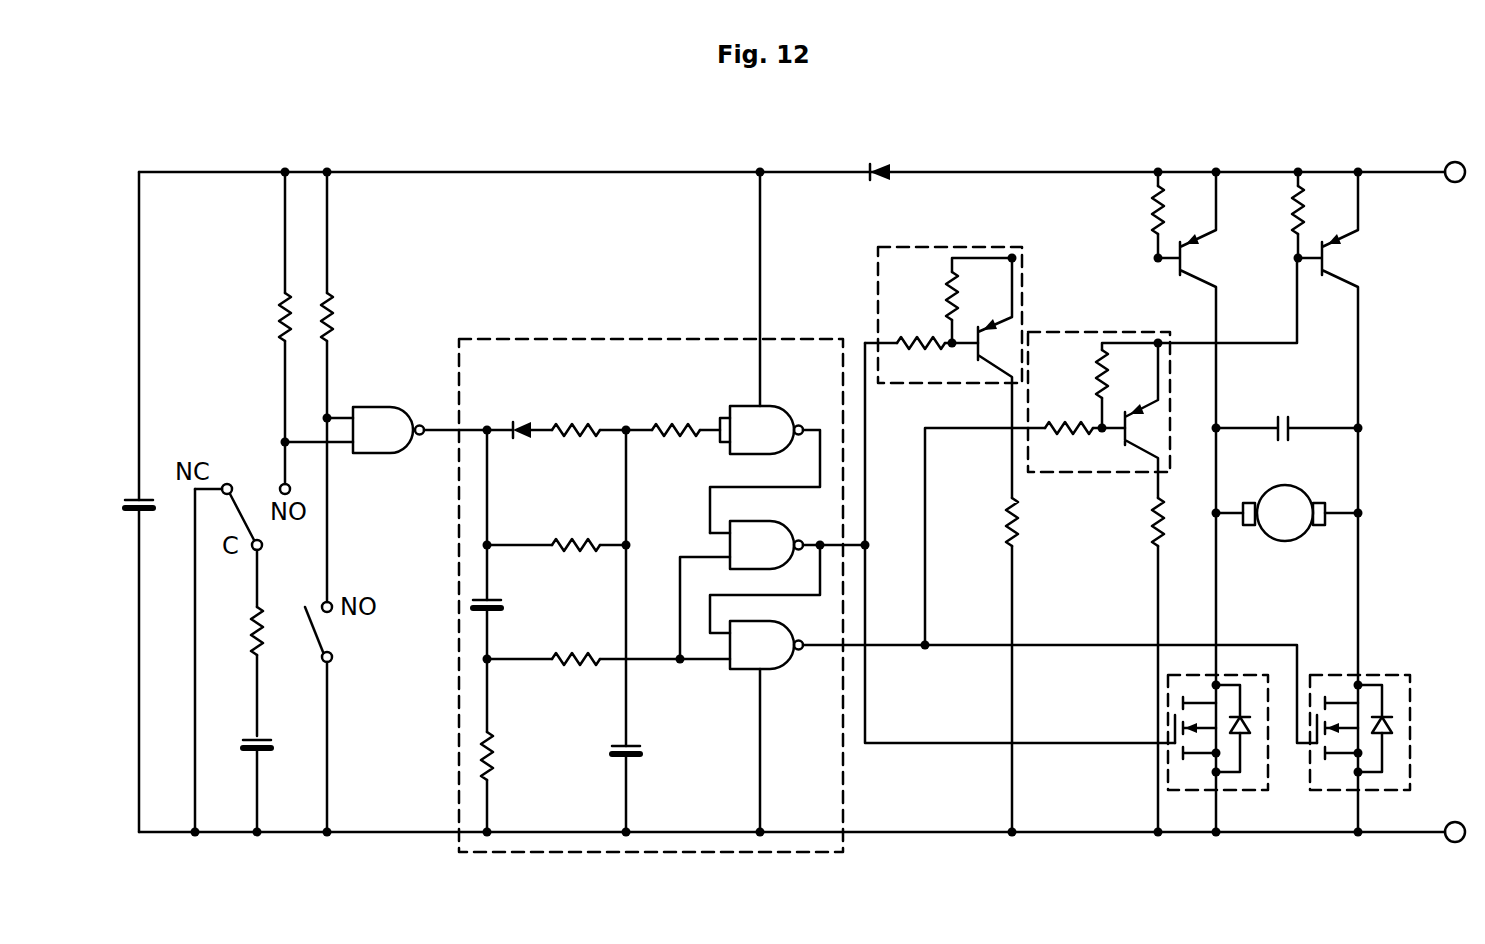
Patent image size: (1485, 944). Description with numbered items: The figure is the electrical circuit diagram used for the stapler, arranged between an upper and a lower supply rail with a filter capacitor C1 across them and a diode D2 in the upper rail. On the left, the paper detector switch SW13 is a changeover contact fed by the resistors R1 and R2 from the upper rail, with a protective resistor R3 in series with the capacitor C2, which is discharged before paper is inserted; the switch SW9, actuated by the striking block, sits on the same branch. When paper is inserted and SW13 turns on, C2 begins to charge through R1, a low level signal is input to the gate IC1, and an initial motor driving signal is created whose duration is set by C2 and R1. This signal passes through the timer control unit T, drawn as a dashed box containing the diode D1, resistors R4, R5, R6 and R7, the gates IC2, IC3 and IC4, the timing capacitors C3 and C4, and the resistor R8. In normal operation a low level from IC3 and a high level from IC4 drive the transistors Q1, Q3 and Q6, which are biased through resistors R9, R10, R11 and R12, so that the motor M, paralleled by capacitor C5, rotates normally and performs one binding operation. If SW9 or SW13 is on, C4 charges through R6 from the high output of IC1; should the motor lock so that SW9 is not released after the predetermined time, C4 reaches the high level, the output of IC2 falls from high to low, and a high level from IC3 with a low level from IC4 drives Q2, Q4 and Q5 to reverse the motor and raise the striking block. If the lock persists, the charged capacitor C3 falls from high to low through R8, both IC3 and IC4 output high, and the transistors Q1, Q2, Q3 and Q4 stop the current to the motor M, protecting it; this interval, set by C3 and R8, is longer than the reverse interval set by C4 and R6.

The filter capacitor C1 is at (126, 506).
The resistor R1 is at (275, 318).
The resistor R2 is at (343, 315).
The element IC1 is at (386, 430).
The paper detector switch SW13 is at (268, 492).
The protective resistor R3 is at (249, 633).
The capacitor C2 is at (268, 744).
The switch SW9 is at (329, 622).
The timer control unit T is at (462, 845).
The diode D1 is at (518, 420).
The resistor R4 is at (578, 422).
The resistor R5 is at (674, 422).
The element IC2 is at (765, 352).
The resistor R6 is at (578, 540).
The capacitor C3 is at (497, 606).
The resistor R7 is at (573, 673).
The resistor R8 is at (497, 755).
The capacitor C4 is at (641, 751).
The element IC3 is at (772, 590).
The element IC4 is at (1013, 688).
The diode D2 is at (877, 167).
The driving transistor Q1 is at (933, 370).
The resistor R9 is at (1023, 536).
The transistor Q2 is at (1103, 465).
The resistor R10 is at (1165, 533).
The resistor R11 is at (1150, 210).
The resistor R12 is at (1290, 209).
The driving transistor Q3 is at (1200, 262).
The transistor Q4 is at (1337, 257).
The capacitor C5 is at (1283, 417).
The motor M is at (1287, 505).
The transistor Q5 is at (1240, 783).
The driving transistor Q6 is at (1382, 783).